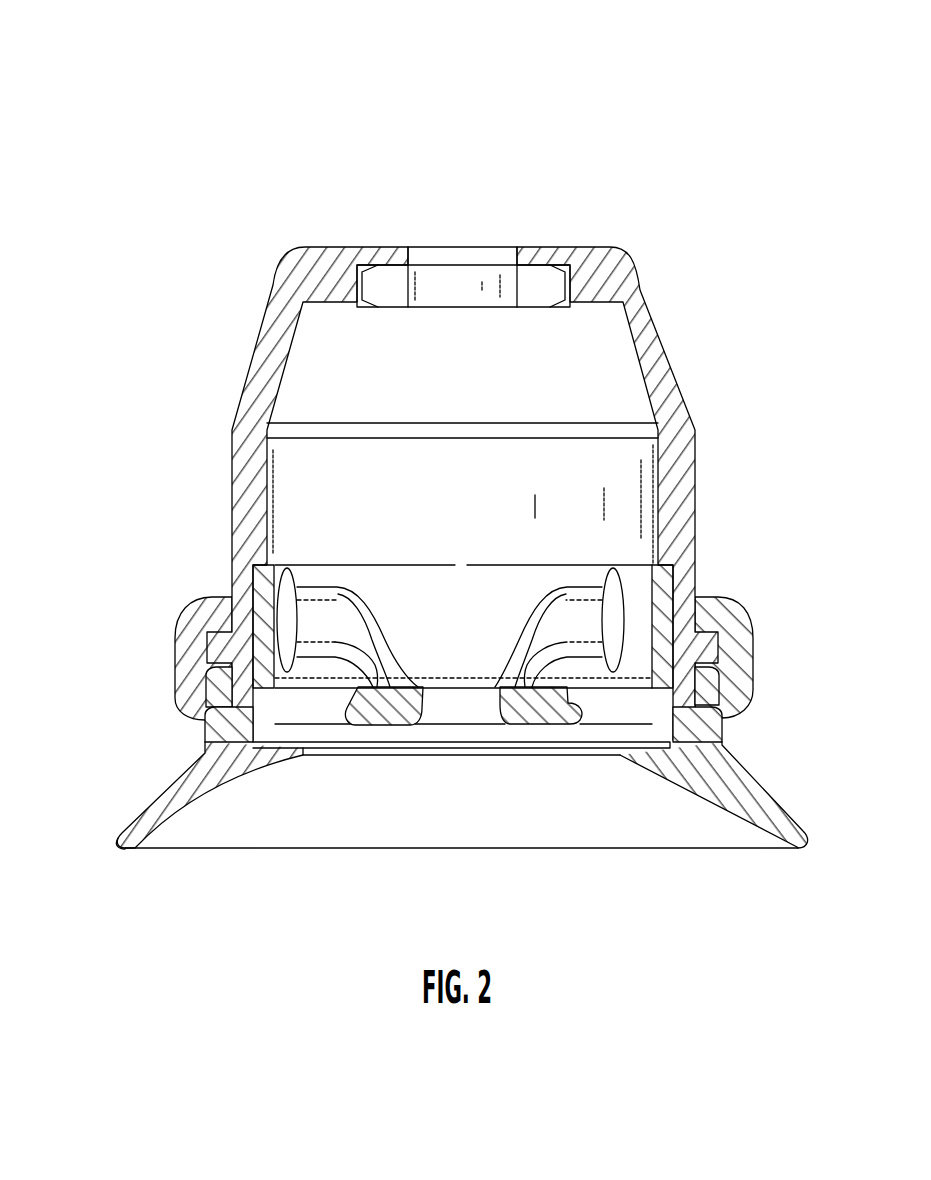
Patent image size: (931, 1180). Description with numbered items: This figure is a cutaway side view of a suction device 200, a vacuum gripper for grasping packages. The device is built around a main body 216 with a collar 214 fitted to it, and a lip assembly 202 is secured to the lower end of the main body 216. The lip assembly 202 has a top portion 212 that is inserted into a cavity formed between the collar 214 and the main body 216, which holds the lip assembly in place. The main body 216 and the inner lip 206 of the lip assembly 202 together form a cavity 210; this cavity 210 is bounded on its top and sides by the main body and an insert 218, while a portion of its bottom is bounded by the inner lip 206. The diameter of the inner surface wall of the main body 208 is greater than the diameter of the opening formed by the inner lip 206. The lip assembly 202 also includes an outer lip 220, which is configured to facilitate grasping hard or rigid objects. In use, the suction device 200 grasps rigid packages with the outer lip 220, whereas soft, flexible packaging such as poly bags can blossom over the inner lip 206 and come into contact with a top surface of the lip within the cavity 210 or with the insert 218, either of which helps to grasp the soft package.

The suction device 200 is at (147, 80).
The lip assembly 202 is at (190, 782).
The inner lip 206 is at (625, 752).
The inner surface wall of the main body 208 is at (215, 692).
The cavity 210 is at (640, 715).
The top portion 212 is at (205, 688).
The collar 214 is at (185, 618).
The main body 216 is at (232, 567).
The insert 218 is at (363, 708).
The outer lip 220 is at (135, 835).